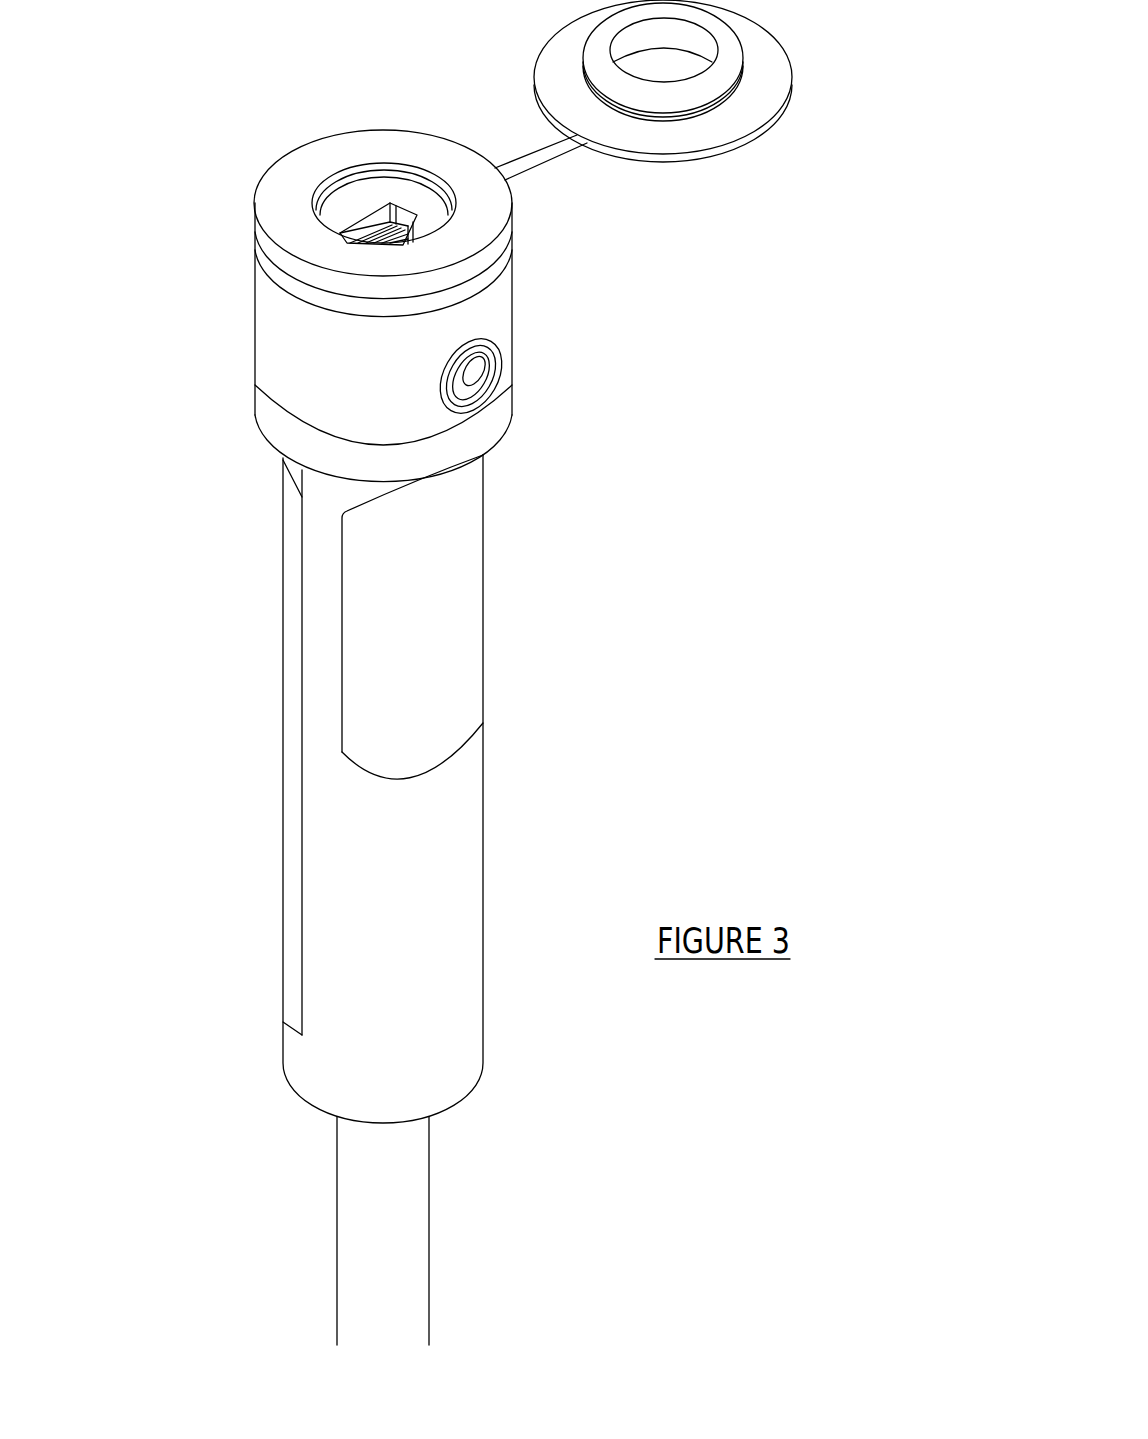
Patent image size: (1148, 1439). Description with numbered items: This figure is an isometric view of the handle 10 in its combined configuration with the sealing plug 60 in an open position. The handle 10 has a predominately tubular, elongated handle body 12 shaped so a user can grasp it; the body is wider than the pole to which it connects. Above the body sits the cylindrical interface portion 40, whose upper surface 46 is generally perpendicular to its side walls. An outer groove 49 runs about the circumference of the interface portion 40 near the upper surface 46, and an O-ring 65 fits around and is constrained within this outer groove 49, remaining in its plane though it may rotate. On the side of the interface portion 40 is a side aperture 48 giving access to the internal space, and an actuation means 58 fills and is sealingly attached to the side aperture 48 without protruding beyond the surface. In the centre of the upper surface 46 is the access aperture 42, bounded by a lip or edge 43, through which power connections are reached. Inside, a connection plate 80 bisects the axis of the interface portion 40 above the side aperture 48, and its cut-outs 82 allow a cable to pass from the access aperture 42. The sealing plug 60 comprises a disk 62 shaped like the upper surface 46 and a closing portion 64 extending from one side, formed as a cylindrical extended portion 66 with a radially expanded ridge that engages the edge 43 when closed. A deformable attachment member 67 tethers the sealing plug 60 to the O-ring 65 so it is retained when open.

The handle 10 is at (205, 747).
The handle body 12 is at (450, 813).
The interface portion 40 is at (283, 352).
The access aperture 42 is at (372, 192).
The edge 43 is at (458, 218).
The upper surface 46 is at (292, 178).
The side aperture 48 is at (498, 365).
The outer groove 49 is at (250, 248).
The actuation means 58 is at (480, 375).
The sealing plug 60 is at (773, 68).
The disk 62 is at (733, 118).
The closing portion 64 is at (727, 34).
The O-ring 65 is at (253, 265).
The extended portion 66 is at (655, 100).
The deformable attachment member 67 is at (542, 150).
The connection plate 80 is at (350, 208).
The cut-outs 82 is at (370, 218).